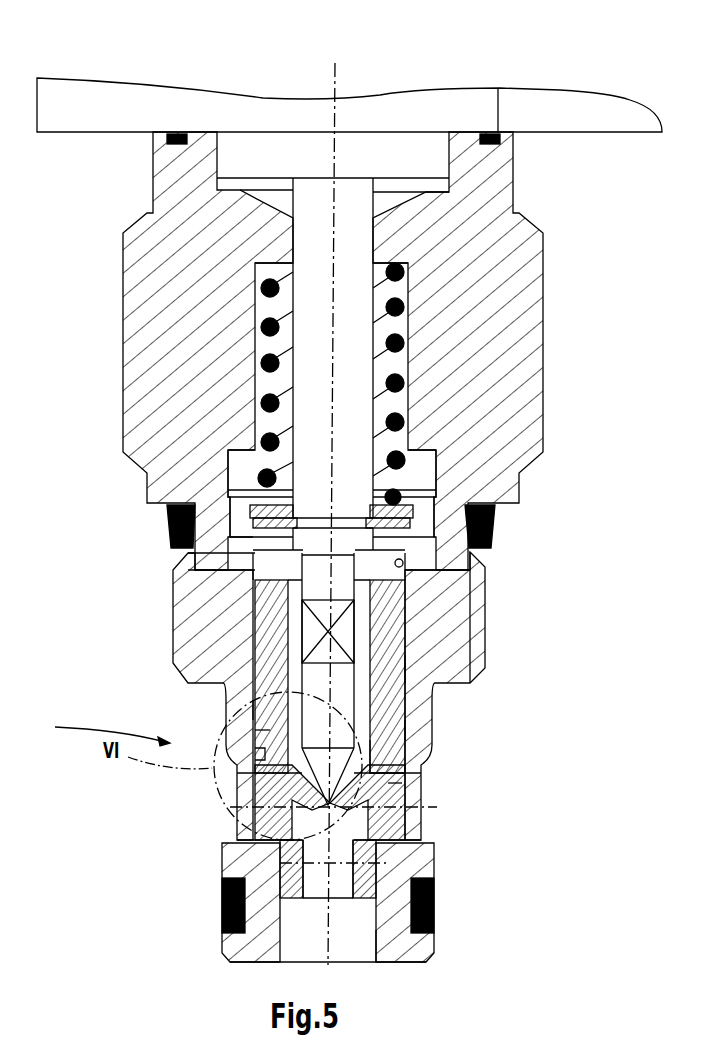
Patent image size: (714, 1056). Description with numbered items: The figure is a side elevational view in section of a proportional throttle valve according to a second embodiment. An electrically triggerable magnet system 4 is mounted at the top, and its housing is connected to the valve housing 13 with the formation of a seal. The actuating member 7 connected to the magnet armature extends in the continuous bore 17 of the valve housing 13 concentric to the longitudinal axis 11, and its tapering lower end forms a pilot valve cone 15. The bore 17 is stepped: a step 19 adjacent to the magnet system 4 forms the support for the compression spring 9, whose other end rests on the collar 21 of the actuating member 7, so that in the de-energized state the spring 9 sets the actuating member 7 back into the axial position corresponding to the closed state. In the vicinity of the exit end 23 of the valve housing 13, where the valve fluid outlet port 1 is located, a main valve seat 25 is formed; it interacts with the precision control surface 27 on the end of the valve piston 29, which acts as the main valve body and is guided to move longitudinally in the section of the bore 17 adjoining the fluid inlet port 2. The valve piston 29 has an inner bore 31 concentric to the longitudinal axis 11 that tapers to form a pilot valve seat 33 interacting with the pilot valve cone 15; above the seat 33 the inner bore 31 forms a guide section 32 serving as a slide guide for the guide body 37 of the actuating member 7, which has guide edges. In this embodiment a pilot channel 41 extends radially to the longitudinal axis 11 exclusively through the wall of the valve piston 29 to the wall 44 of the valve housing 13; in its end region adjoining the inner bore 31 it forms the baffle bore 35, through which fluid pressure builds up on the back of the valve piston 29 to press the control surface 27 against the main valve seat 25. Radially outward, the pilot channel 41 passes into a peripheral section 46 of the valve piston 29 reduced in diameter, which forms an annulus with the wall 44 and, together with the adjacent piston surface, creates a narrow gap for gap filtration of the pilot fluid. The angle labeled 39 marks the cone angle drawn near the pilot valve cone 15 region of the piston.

The valve fluid outlet port 1 is at (366, 938).
The fluid inlet port 2 is at (290, 763).
The magnet system 4 is at (212, 102).
The actuating member 7 is at (307, 347).
The compression spring 9 is at (423, 272).
The longitudinal axis 11 is at (338, 63).
The valve housing 13 is at (450, 648).
The pilot valve cone 15 is at (405, 757).
The continuous bore 17 is at (470, 568).
The step 19 is at (257, 277).
The collar 21 is at (258, 507).
The exit end 23 is at (232, 962).
The main valve seat 25 is at (383, 858).
The precision control surface 27 is at (236, 880).
The valve piston 29 is at (257, 647).
The inner bore 31 is at (405, 738).
The guide section 32 is at (470, 597).
The pilot valve seat 33 is at (398, 775).
The baffle bore 35 is at (248, 710).
The guide body 37 is at (320, 633).
The cone angle 39 is at (93, 731).
The pilot channel 41 is at (255, 738).
The wall 44 is at (403, 678).
The peripheral section 46 is at (265, 737).